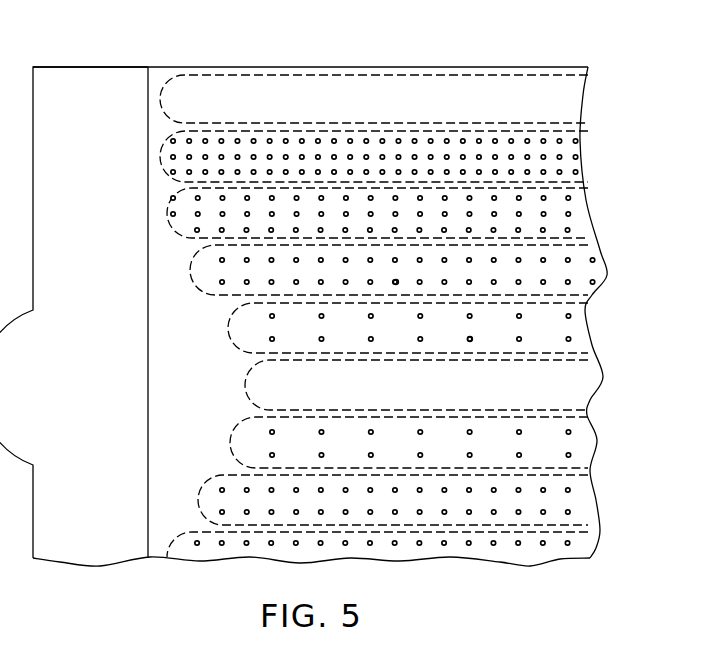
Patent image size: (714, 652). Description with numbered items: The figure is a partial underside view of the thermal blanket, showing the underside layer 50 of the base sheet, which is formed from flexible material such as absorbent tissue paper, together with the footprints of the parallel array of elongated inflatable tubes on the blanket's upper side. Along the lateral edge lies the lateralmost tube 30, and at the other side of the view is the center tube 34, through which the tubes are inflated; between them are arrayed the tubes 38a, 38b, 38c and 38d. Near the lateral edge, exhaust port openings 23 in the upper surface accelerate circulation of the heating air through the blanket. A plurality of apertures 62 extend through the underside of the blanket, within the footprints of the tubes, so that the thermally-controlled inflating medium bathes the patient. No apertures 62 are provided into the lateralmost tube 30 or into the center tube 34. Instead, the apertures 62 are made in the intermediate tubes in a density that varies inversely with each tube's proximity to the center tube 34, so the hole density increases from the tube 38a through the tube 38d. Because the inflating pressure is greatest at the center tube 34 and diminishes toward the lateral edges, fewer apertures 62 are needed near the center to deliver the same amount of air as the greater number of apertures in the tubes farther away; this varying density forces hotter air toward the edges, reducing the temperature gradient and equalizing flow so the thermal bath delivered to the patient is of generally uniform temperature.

The exhaust port openings 23 is at (218, 75).
The lateralmost tube 30 is at (580, 95).
The center tube 34 is at (590, 385).
The tube 38a is at (583, 327).
The tube 38b is at (607, 276).
The tube 38c is at (590, 212).
The tube 38d is at (585, 148).
The underside layer 50 is at (163, 284).
The apertures 62 is at (396, 286).